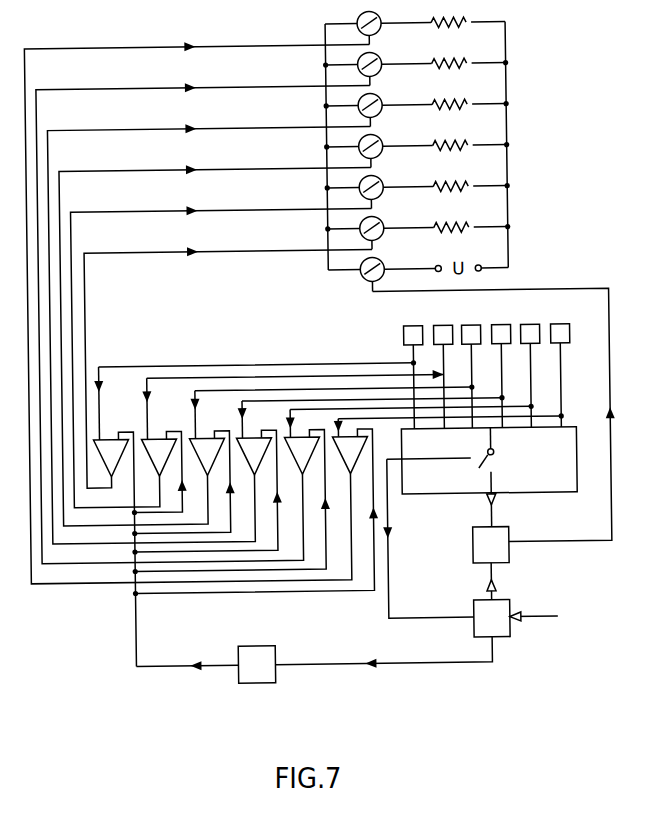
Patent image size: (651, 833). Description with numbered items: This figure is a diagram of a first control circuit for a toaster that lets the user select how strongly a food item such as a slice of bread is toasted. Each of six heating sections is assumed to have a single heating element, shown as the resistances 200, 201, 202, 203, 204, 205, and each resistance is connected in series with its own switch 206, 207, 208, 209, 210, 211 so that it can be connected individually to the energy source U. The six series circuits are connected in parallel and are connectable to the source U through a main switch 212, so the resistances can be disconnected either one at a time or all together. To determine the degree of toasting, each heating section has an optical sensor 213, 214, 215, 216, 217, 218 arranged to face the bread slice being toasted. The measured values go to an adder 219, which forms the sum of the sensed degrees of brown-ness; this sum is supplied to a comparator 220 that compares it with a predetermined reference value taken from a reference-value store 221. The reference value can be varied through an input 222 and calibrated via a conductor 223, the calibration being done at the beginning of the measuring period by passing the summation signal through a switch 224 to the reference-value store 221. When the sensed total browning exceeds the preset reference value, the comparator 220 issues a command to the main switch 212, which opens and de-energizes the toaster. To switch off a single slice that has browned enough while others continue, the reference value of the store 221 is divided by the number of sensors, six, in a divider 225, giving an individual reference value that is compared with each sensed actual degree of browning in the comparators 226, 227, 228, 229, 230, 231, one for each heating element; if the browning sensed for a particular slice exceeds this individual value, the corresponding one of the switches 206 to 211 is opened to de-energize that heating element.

The resistance 200 is at (451, 217).
The resistance 201 is at (451, 176).
The resistance 202 is at (450, 135).
The resistance 203 is at (450, 94).
The resistance 204 is at (449, 53).
The resistance 205 is at (449, 14).
The switch 206 is at (382, 223).
The switch 207 is at (382, 182).
The switch 208 is at (382, 141).
The switch 209 is at (382, 100).
The switch 210 is at (382, 59).
The switch 211 is at (382, 18).
The main switch 212 is at (369, 279).
The optical sensor 213 is at (404, 337).
The optical sensor 214 is at (434, 327).
The optical sensor 215 is at (469, 327).
The optical sensor 216 is at (503, 327).
The optical sensor 217 is at (536, 327).
The optical sensor 218 is at (571, 337).
The adder 219 is at (574, 430).
The comparator 220 is at (505, 538).
The reference-value store 221 is at (505, 607).
The input 222 is at (542, 621).
The conductor 223 is at (426, 617).
The switch 224 is at (493, 461).
The divider 225 is at (255, 685).
The comparator 226 is at (105, 437).
The comparator 227 is at (156, 437).
The comparator 228 is at (205, 437).
The comparator 229 is at (251, 437).
The comparator 230 is at (296, 437).
The comparator 231 is at (342, 436).